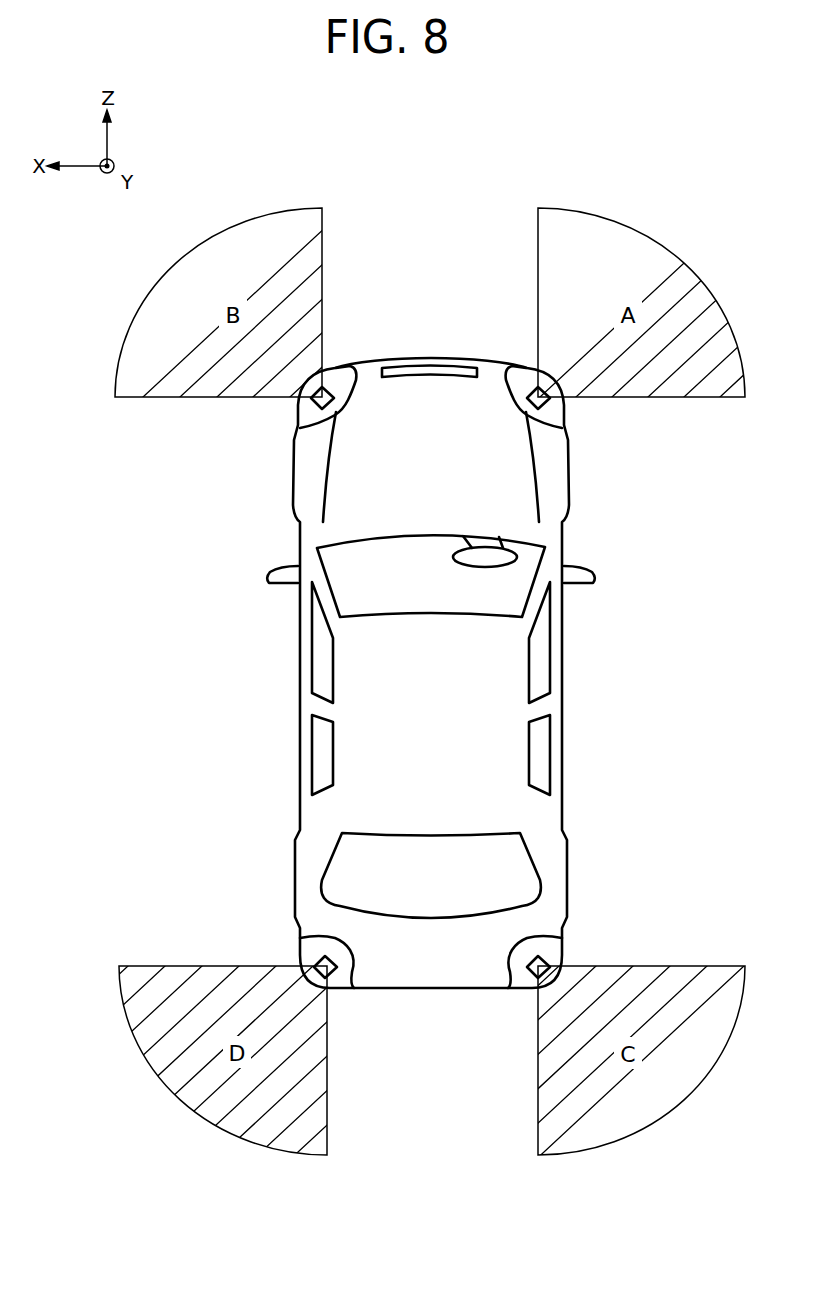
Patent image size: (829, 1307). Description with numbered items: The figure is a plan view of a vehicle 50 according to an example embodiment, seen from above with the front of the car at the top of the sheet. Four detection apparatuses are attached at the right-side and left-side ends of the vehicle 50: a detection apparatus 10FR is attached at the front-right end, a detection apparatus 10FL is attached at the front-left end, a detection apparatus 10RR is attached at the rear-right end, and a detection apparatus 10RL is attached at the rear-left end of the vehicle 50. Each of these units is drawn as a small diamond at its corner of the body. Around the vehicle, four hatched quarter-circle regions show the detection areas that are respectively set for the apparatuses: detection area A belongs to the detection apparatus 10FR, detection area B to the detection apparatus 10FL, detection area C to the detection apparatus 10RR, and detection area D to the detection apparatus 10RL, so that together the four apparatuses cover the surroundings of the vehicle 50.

The vehicle 50 is at (605, 697).
The detection apparatus 10FL is at (337, 364).
The detection apparatus 10FR is at (522, 364).
The detection apparatus 10RL is at (305, 957).
The detection apparatus 10RR is at (560, 957).